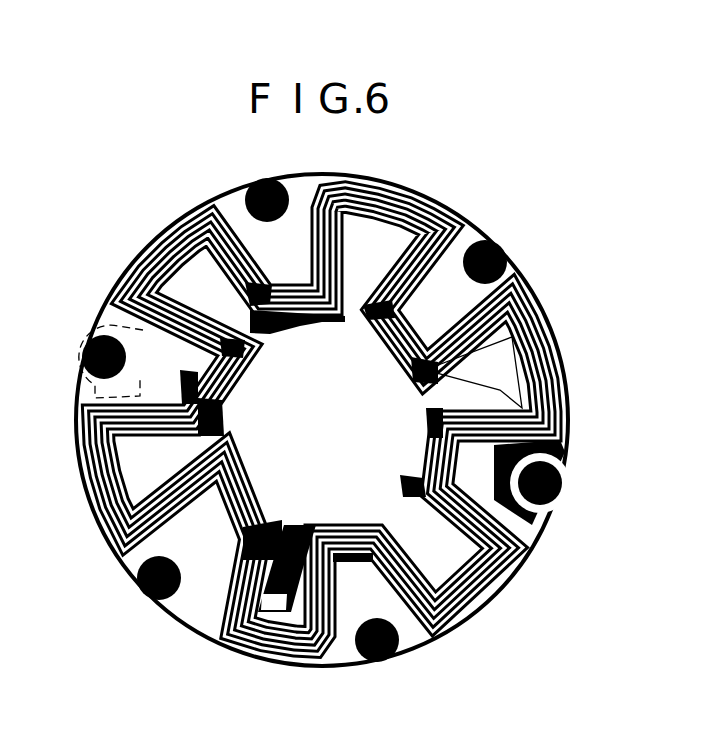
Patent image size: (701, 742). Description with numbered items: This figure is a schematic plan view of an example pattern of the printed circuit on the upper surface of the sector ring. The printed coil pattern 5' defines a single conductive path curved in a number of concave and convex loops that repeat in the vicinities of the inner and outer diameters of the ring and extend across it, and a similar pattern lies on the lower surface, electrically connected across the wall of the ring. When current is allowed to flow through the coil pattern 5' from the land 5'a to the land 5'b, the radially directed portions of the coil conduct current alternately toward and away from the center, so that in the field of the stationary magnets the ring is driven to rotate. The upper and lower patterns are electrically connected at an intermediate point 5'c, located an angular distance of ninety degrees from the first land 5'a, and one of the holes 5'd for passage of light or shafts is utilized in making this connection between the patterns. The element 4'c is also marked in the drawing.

The printed coil pattern 5' is at (322, 419).
The land 5'a is at (559, 477).
The land 5'b is at (89, 340).
The intermediate point 5'c is at (297, 509).
The hole 5'd is at (289, 645).
The position indicator 4'c is at (517, 372).